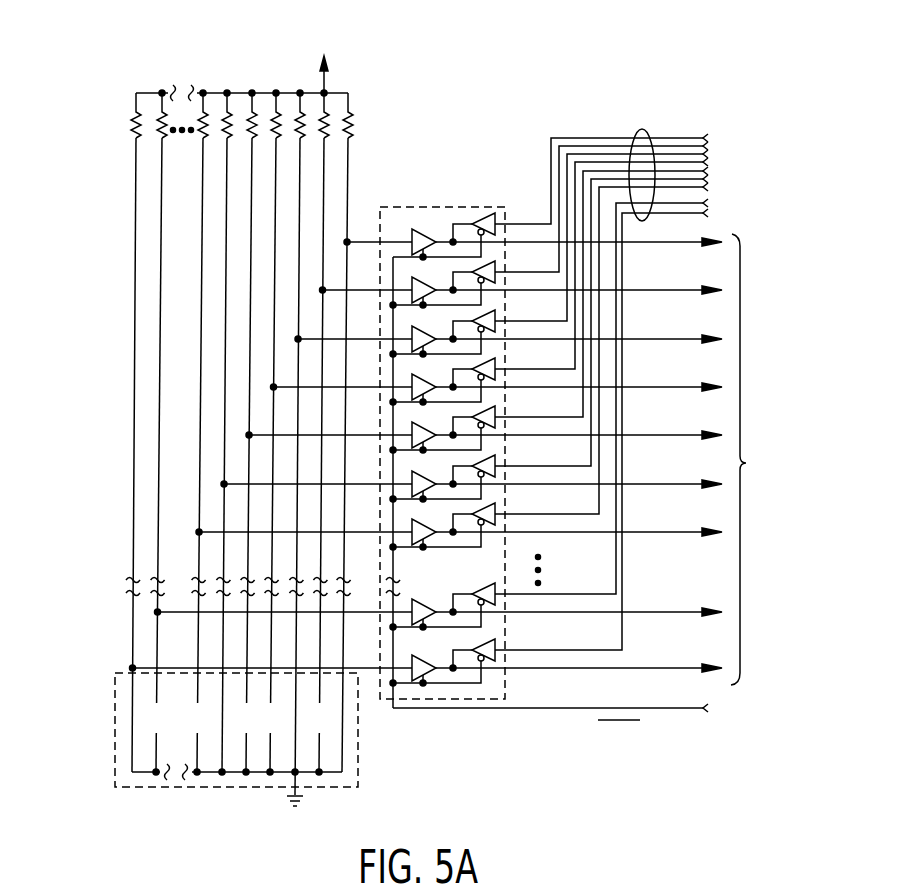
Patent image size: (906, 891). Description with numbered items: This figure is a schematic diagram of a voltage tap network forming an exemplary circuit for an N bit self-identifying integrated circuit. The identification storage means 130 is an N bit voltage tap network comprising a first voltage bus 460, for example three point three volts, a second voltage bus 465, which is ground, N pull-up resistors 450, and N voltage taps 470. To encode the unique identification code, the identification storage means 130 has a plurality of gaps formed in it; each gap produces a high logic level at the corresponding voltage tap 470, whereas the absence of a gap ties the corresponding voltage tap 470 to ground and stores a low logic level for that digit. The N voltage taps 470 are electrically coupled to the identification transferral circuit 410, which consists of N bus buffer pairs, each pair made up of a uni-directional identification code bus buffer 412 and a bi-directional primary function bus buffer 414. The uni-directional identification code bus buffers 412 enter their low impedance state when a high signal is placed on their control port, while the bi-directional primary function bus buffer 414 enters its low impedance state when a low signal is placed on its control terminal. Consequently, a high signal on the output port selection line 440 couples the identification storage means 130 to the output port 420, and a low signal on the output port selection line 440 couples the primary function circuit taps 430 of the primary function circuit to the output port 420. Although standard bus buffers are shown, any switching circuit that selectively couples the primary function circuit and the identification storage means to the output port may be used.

The identification storage means 130 is at (116, 734).
The identification transferral circuit 410 is at (413, 207).
The uni-directional identification code bus buffer 412 is at (428, 238).
The bi-directional primary function bus buffer 414 is at (488, 213).
The output port 420 is at (711, 450).
The primary function circuit taps 430 is at (647, 136).
The output port selection line 440 is at (692, 712).
The pull-up resistors 450 is at (137, 131).
The first voltage bus 460 is at (328, 72).
The second voltage bus 465 is at (298, 778).
The voltage taps 470 is at (224, 482).